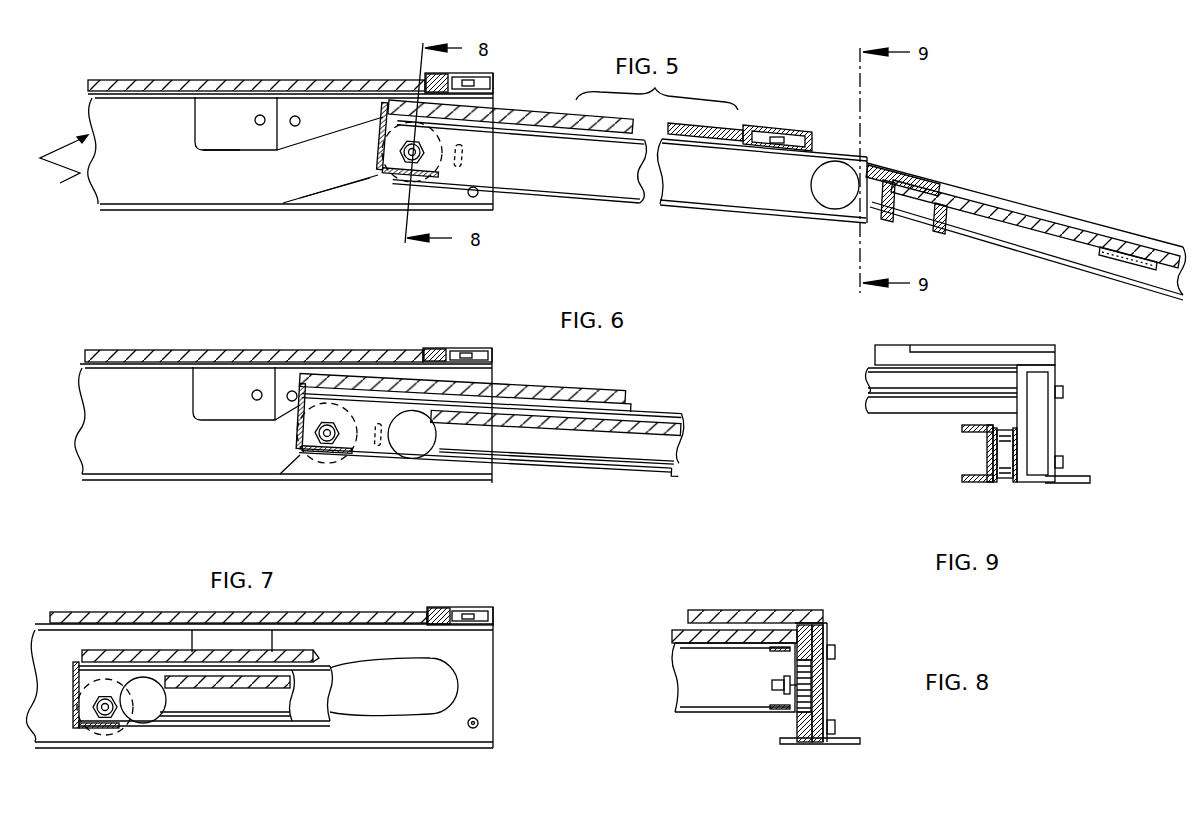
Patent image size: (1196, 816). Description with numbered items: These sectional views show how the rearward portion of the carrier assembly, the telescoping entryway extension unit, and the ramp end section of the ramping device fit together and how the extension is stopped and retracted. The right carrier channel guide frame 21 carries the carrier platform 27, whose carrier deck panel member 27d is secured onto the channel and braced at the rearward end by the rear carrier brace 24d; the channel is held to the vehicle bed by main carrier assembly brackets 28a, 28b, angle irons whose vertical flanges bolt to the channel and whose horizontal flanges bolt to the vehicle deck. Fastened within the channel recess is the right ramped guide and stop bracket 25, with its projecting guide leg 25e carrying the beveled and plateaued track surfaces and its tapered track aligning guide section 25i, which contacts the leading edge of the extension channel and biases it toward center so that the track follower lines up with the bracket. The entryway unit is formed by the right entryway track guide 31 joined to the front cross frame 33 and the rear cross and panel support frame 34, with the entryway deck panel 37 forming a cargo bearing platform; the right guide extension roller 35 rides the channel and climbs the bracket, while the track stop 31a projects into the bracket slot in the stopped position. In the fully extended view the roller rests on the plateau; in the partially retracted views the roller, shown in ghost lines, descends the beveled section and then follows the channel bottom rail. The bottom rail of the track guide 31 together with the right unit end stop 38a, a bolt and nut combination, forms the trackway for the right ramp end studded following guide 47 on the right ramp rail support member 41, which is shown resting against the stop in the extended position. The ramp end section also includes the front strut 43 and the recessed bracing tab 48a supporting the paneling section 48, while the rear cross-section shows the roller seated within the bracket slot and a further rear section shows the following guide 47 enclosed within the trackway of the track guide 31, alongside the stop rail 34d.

In FIG. 5, the right carrier channel guide frame 21 is at (232, 212).
In FIG. 6, the right carrier channel guide frame 21 is at (145, 452).
In FIG. 9, the right carrier channel guide frame 21 is at (1055, 412).
In FIG. 7, the right carrier channel guide frame 21 is at (423, 744).
In FIG. 8, the right carrier channel guide frame 21 is at (833, 624).
In FIG. 5, the rear carrier brace 24d is at (498, 75).
In FIG. 6, the rear carrier brace 24d is at (436, 347).
In FIG. 9, the rear carrier brace 24d is at (1056, 354).
In FIG. 7, the rear carrier brace 24d is at (445, 594).
In FIG. 5, the right ramped guide and stop bracket 25 is at (195, 123).
In FIG. 6, the right ramped guide and stop bracket 25 is at (193, 393).
In FIG. 9, the right ramped guide and stop bracket 25 is at (1040, 425).
In FIG. 7, the right ramped guide and stop bracket 25 is at (480, 667).
In FIG. 8, the right ramped guide and stop bracket 25 is at (830, 641).
In FIG. 5, the projecting guide leg 25e is at (337, 197).
In FIG. 5, the track aligning guide section 25i is at (215, 137).
In FIG. 5, the carrier platform 27 is at (60, 165).
In FIG. 5, the carrier deck panel member 27d is at (146, 78).
In FIG. 6, the carrier deck panel member 27d is at (146, 347).
In FIG. 7, the carrier deck panel member 27d is at (144, 611).
In FIG. 8, the carrier deck panel member 27d is at (732, 608).
In FIG. 8, the main carrier assembly bracket 28a is at (860, 740).
In FIG. 9, the main carrier assembly bracket 28b is at (1082, 475).
In FIG. 5, the right entryway track guide 31 is at (714, 203).
In FIG. 6, the right entryway track guide 31 is at (562, 469).
In FIG. 9, the right entryway track guide 31 is at (1010, 487).
In FIG. 7, the right entryway track guide 31 is at (320, 728).
In FIG. 8, the right entryway track guide 31 is at (790, 664).
In FIG. 5, the track stop 31a is at (465, 152).
In FIG. 6, the track stop 31a is at (378, 446).
In FIG. 5, the front cross frame 33 is at (379, 145).
In FIG. 6, the front cross frame 33 is at (296, 432).
In FIG. 7, the front cross frame 33 is at (74, 712).
In FIG. 8, the front cross frame 33 is at (675, 660).
In FIG. 5, the rear cross and panel support frame 34 is at (772, 125).
In FIG. 9, the stop rail 34d is at (868, 403).
In FIG. 5, the right guide extension roller 35 is at (398, 183).
In FIG. 6, the right guide extension roller 35 is at (330, 468).
In FIG. 7, the right guide extension roller 35 is at (108, 732).
In FIG. 8, the right guide extension roller 35 is at (815, 690).
In FIG. 5, the entryway deck panel 37 is at (510, 110).
In FIG. 6, the entryway deck panel 37 is at (562, 383).
In FIG. 9, the entryway deck panel 37 is at (867, 371).
In FIG. 7, the entryway deck panel 37 is at (84, 654).
In FIG. 8, the entryway deck panel 37 is at (680, 631).
In FIG. 5, the right unit end stop 38a is at (870, 164).
In FIG. 5, the right ramp rail support member 41 is at (1074, 272).
In FIG. 6, the right ramp rail support member 41 is at (660, 475).
In FIG. 9, the right ramp rail support member 41 is at (985, 447).
In FIG. 7, the right ramp rail support member 41 is at (187, 722).
In FIG. 5, the front strut 43 is at (906, 206).
In FIG. 5, the right ramp end studded following guide 47 is at (822, 185).
In FIG. 6, the right ramp end studded following guide 47 is at (410, 445).
In FIG. 9, the right ramp end studded following guide 47 is at (997, 490).
In FIG. 7, the right ramp end studded following guide 47 is at (138, 712).
In FIG. 5, the paneling section 48 is at (1041, 214).
In FIG. 6, the paneling section 48 is at (683, 421).
In FIG. 7, the paneling section 48 is at (238, 692).
In FIG. 5, the recessed bracing tab 48a is at (1134, 248).